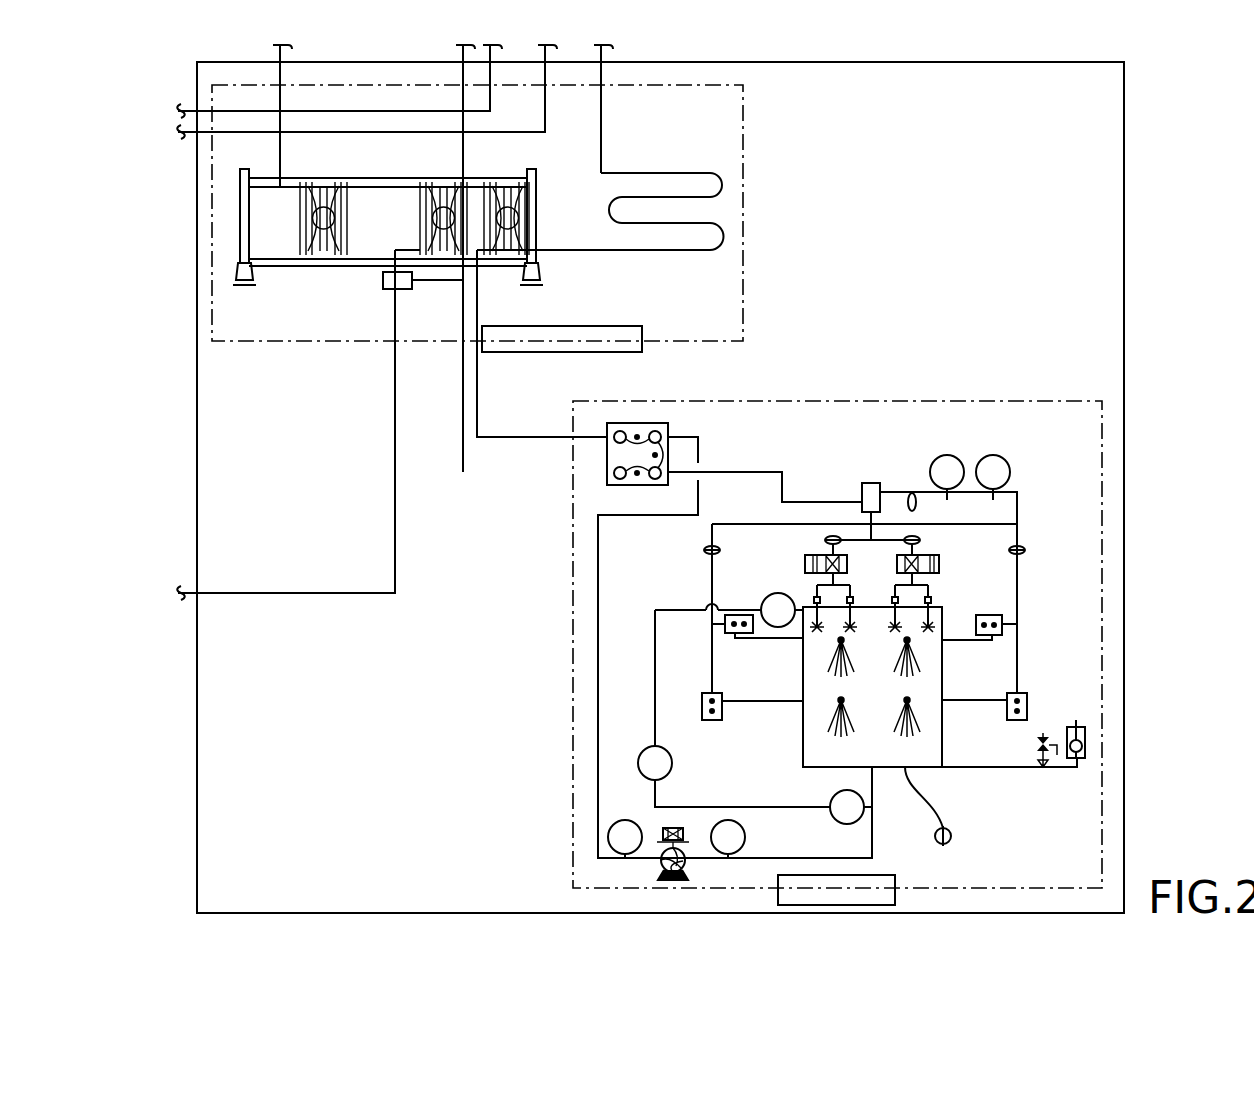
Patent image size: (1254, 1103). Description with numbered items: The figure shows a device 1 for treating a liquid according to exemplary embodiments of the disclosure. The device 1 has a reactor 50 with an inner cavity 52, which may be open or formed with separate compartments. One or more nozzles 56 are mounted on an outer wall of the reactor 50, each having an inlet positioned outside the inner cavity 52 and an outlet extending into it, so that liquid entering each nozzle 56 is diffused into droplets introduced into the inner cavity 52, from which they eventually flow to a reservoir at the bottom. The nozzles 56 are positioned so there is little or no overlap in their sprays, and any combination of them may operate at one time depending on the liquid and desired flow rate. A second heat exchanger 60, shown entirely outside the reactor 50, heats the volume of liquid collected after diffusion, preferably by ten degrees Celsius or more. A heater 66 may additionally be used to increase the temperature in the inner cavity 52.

The device 1 is at (1145, 288).
The reactor 50 is at (837, 609).
The inner cavity 52 is at (922, 690).
The nozzle 56 is at (841, 640).
The second heat exchanger 60 is at (385, 156).
The heater 66 is at (951, 836).